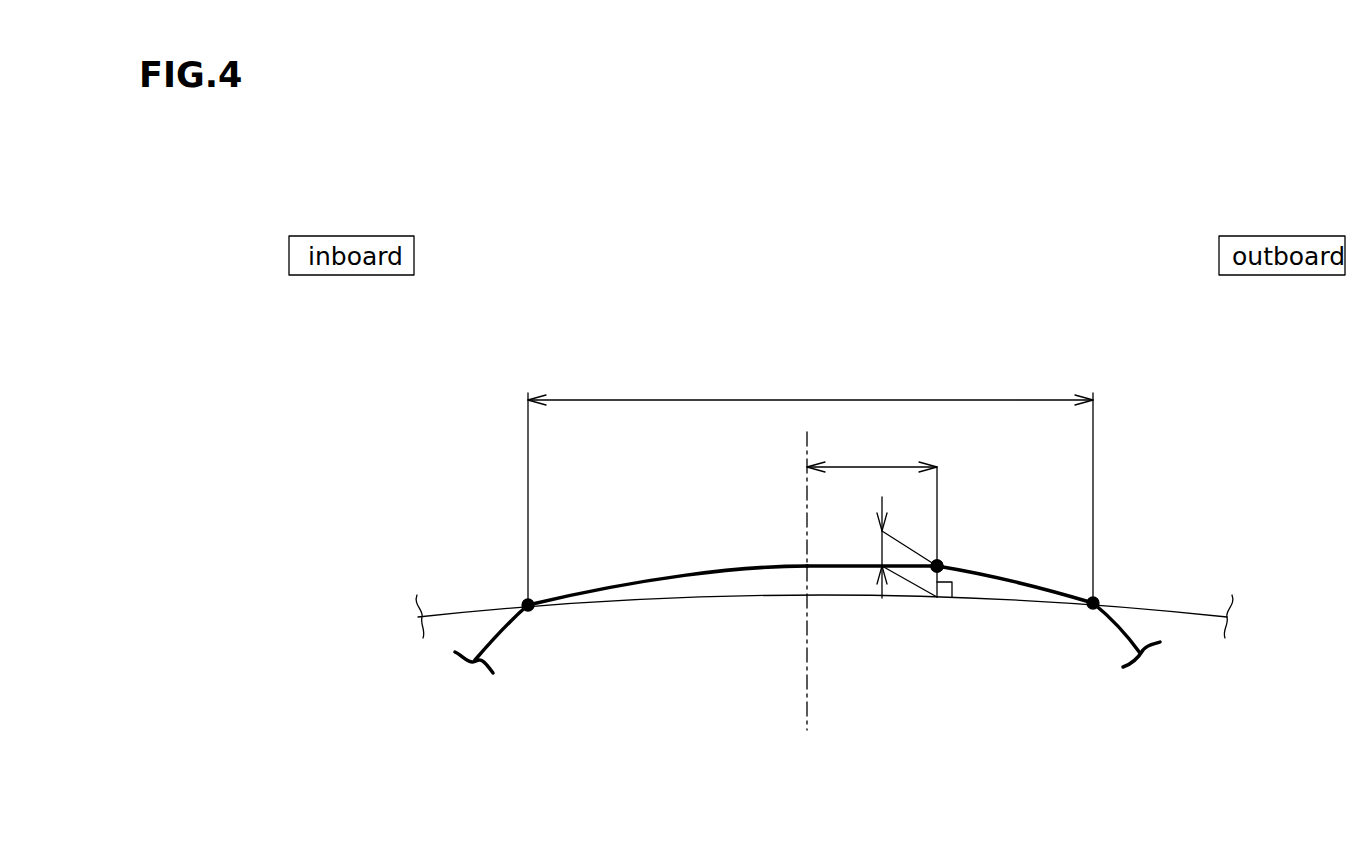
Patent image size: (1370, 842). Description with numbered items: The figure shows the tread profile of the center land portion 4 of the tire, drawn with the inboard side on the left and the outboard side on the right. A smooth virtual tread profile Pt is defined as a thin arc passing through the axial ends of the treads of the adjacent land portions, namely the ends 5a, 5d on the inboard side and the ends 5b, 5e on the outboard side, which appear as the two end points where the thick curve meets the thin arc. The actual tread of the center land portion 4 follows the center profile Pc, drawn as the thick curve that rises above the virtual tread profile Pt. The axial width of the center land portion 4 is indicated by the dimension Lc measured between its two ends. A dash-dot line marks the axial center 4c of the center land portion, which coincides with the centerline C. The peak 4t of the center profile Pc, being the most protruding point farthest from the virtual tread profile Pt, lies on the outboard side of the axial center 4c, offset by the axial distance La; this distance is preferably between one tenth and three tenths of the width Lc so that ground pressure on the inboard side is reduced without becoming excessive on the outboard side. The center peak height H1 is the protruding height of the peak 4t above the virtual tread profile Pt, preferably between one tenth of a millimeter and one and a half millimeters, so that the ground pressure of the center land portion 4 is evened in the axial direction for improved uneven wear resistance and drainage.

The center land portion 4 is at (1128, 433).
The axial center of the center land portion 4c is at (807, 566).
The peak of the center profile 4t is at (937, 566).
The axial end of the tread of the inboard middle land portion 5a is at (459, 572).
The axial end of the tread of the outboard middle land portion 5d is at (528, 605).
The axial end of the tread of the inboard middle land portion 5b is at (1159, 565).
The axial end of the tread of the outboard middle land portion 5e is at (1093, 603).
The tire equator centerline C is at (806, 597).
The axial width of the center land portion Lc is at (810, 482).
The axial distance between the peak and the axial center La is at (872, 514).
The center peak height H1 is at (882, 546).
The center profile Pc is at (652, 582).
The virtual tread profile Pt is at (700, 595).